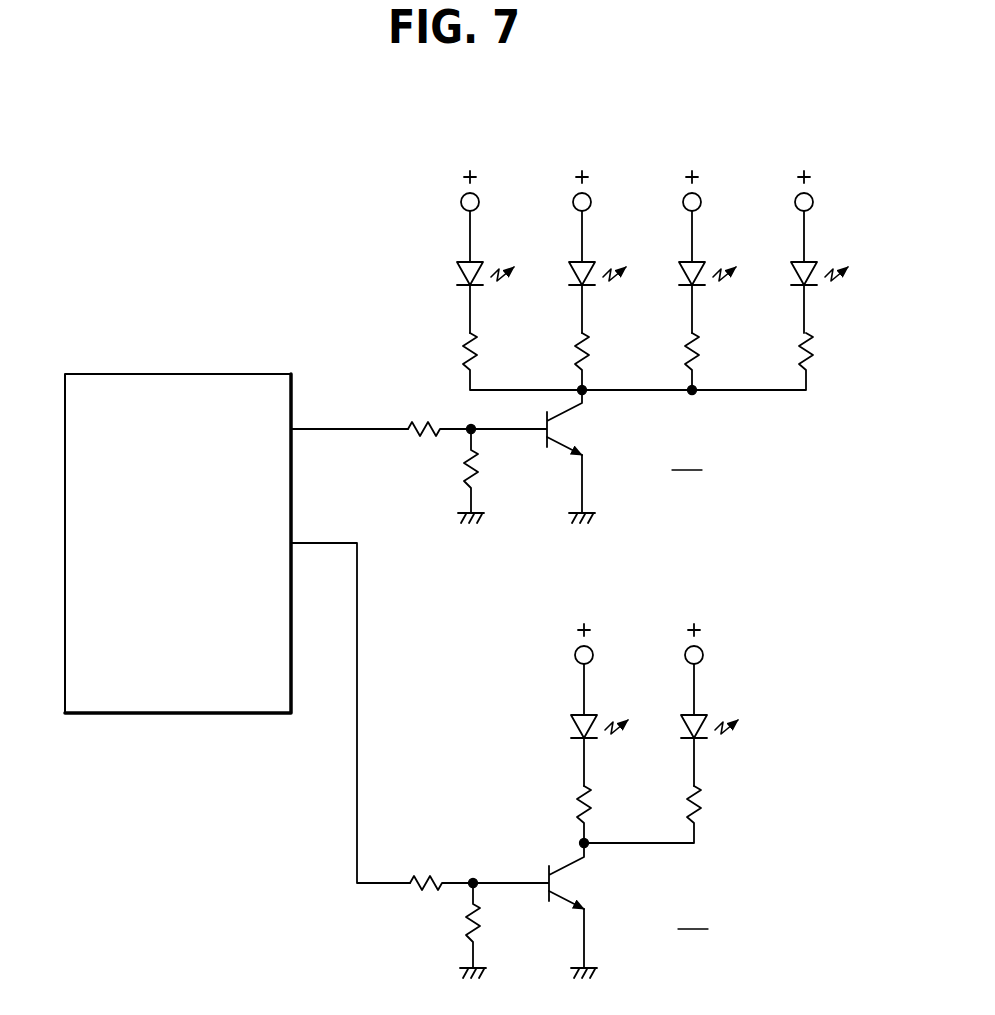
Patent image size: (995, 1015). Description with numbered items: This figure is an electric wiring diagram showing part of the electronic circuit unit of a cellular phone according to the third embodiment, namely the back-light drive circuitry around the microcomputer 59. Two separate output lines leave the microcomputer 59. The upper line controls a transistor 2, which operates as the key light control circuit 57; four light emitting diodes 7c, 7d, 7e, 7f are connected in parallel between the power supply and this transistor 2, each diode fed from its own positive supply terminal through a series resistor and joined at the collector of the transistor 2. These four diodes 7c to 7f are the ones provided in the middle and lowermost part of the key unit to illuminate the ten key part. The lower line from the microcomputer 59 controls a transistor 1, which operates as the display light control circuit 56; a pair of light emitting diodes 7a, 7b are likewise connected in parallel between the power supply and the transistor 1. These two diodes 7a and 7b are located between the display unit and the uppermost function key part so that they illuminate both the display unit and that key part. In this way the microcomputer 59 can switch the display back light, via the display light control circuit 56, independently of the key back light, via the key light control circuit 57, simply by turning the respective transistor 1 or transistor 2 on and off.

The microcomputer 59 is at (207, 720).
The key light control circuit 57 is at (610, 428).
The display light control circuit 56 is at (560, 882).
The transistor 2 is at (557, 452).
The transistor 1 is at (542, 904).
The light emitting diode 7a is at (553, 731).
The light emitting diode 7b is at (669, 722).
The light emitting diode 7c is at (440, 280).
The light emitting diode 7d is at (562, 268).
The light emitting diode 7e is at (666, 266).
The light emitting diode 7f is at (780, 266).